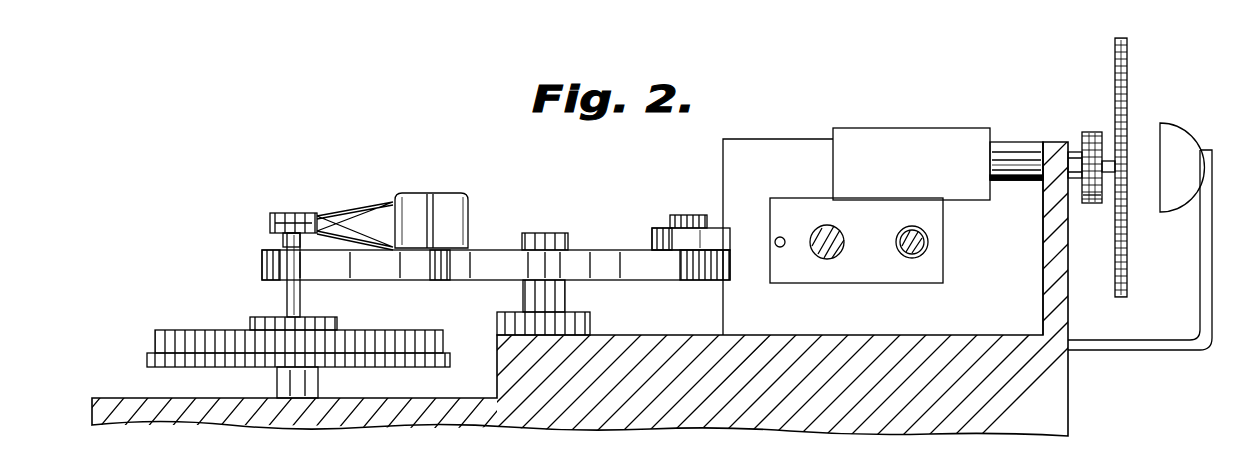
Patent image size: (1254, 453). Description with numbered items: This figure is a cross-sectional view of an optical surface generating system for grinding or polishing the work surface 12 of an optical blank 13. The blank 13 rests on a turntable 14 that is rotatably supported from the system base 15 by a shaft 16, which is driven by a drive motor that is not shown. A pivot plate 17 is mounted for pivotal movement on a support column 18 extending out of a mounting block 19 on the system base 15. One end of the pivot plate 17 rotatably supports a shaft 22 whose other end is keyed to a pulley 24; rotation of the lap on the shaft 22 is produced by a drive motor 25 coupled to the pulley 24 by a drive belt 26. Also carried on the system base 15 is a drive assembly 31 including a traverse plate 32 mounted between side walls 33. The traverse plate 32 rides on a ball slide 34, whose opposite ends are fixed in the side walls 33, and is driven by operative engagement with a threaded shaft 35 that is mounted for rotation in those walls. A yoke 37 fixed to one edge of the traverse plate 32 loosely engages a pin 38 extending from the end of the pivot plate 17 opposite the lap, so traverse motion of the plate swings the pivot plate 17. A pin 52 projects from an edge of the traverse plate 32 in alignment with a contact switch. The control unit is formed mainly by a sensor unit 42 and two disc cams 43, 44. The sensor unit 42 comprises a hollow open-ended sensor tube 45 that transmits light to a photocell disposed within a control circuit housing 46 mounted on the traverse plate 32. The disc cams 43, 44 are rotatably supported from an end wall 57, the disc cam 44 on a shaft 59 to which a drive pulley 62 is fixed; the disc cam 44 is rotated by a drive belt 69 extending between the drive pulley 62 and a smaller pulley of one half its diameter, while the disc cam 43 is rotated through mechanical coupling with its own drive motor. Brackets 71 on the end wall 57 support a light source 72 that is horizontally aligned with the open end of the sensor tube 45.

The work surface 12 is at (238, 313).
The optical blank 13 is at (263, 341).
The turntable 14 is at (271, 368).
The system base 15 is at (642, 226).
The shaft 16 is at (270, 382).
The pivot plate 17 is at (496, 244).
The support column 18 is at (521, 272).
The mounting block 19 is at (562, 321).
The shaft 22 is at (270, 275).
The pulley 24 is at (267, 217).
The drive motor 25 is at (431, 204).
The drive belt 26 is at (355, 214).
The drive assembly 31 is at (815, 112).
The traverse plate 32 is at (856, 224).
The side walls 33 is at (883, 221).
The ball slide 34 is at (825, 269).
The threaded shaft 35 is at (908, 270).
The yoke 37 is at (703, 222).
The pin 38 is at (688, 205).
The sensor unit 42 is at (1014, 138).
The disc cam 43 is at (1122, 180).
The disc cam 44 is at (1140, 167).
The sensor tube 45 is at (1016, 194).
The control circuit housing 46 is at (911, 147).
The pin 52 is at (760, 270).
The end wall 57 is at (1017, 238).
The shaft 59 is at (1088, 211).
The drive pulley 62 is at (1073, 153).
The drive belt 69 is at (1096, 122).
The brackets 71 is at (1140, 250).
The light source 72 is at (1188, 155).